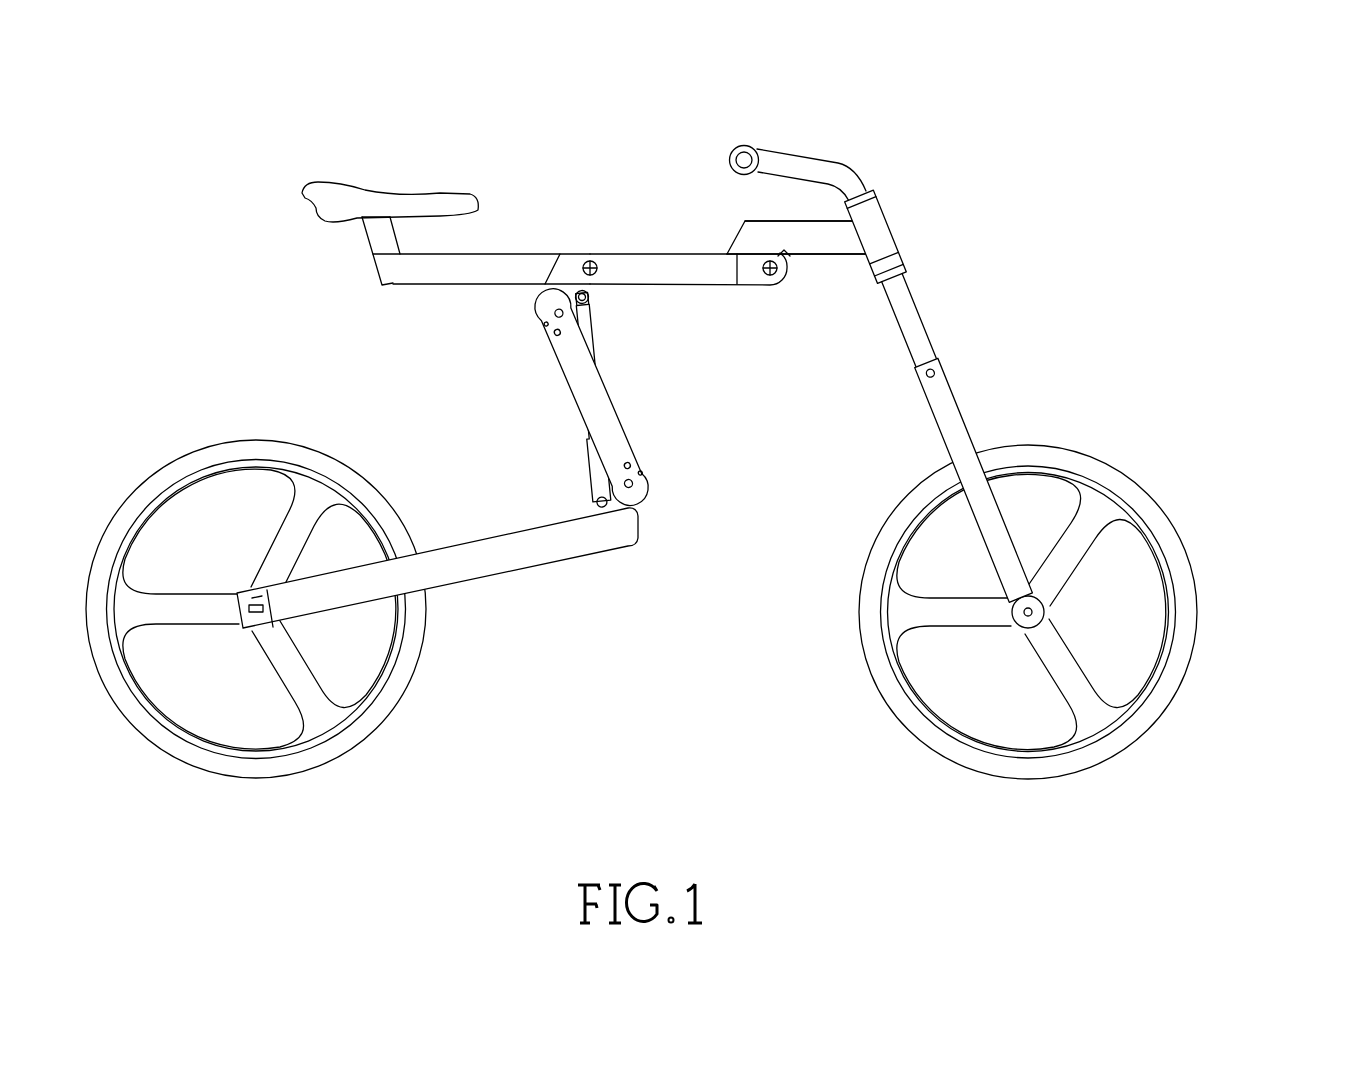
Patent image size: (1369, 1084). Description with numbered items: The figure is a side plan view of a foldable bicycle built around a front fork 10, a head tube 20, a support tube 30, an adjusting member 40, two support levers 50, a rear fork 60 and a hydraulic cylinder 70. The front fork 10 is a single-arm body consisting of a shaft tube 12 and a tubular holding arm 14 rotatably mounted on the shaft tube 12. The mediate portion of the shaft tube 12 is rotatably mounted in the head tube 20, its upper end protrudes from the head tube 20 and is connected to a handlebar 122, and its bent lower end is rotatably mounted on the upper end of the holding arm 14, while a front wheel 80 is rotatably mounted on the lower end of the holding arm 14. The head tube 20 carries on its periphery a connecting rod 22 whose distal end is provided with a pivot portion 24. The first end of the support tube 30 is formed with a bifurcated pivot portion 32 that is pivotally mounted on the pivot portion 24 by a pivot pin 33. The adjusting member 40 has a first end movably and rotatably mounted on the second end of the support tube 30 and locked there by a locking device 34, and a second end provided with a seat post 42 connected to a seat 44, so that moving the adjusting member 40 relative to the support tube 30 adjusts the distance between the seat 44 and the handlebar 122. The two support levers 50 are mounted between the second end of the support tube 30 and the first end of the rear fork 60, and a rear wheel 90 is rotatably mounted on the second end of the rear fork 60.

The front fork 10 is at (1010, 283).
The shaft tube 12 is at (908, 318).
The holding arm 14 is at (953, 423).
The head tube 20 is at (854, 148).
The connecting rod 22 is at (840, 243).
The pivot portion 24 is at (787, 255).
The support tube 30 is at (671, 243).
The bifurcated pivot portion 32 is at (767, 284).
The pivot pin 33 is at (765, 275).
The locking device 34 is at (589, 260).
The adjusting member 40 is at (511, 250).
The seat post 42 is at (375, 237).
The seat 44 is at (403, 199).
The support levers 50 is at (633, 413).
The rear fork 60 is at (497, 585).
The hydraulic cylinder 70 is at (583, 465).
The front wheel 80 is at (1180, 658).
The rear wheel 90 is at (285, 758).
The handlebar 122 is at (795, 162).